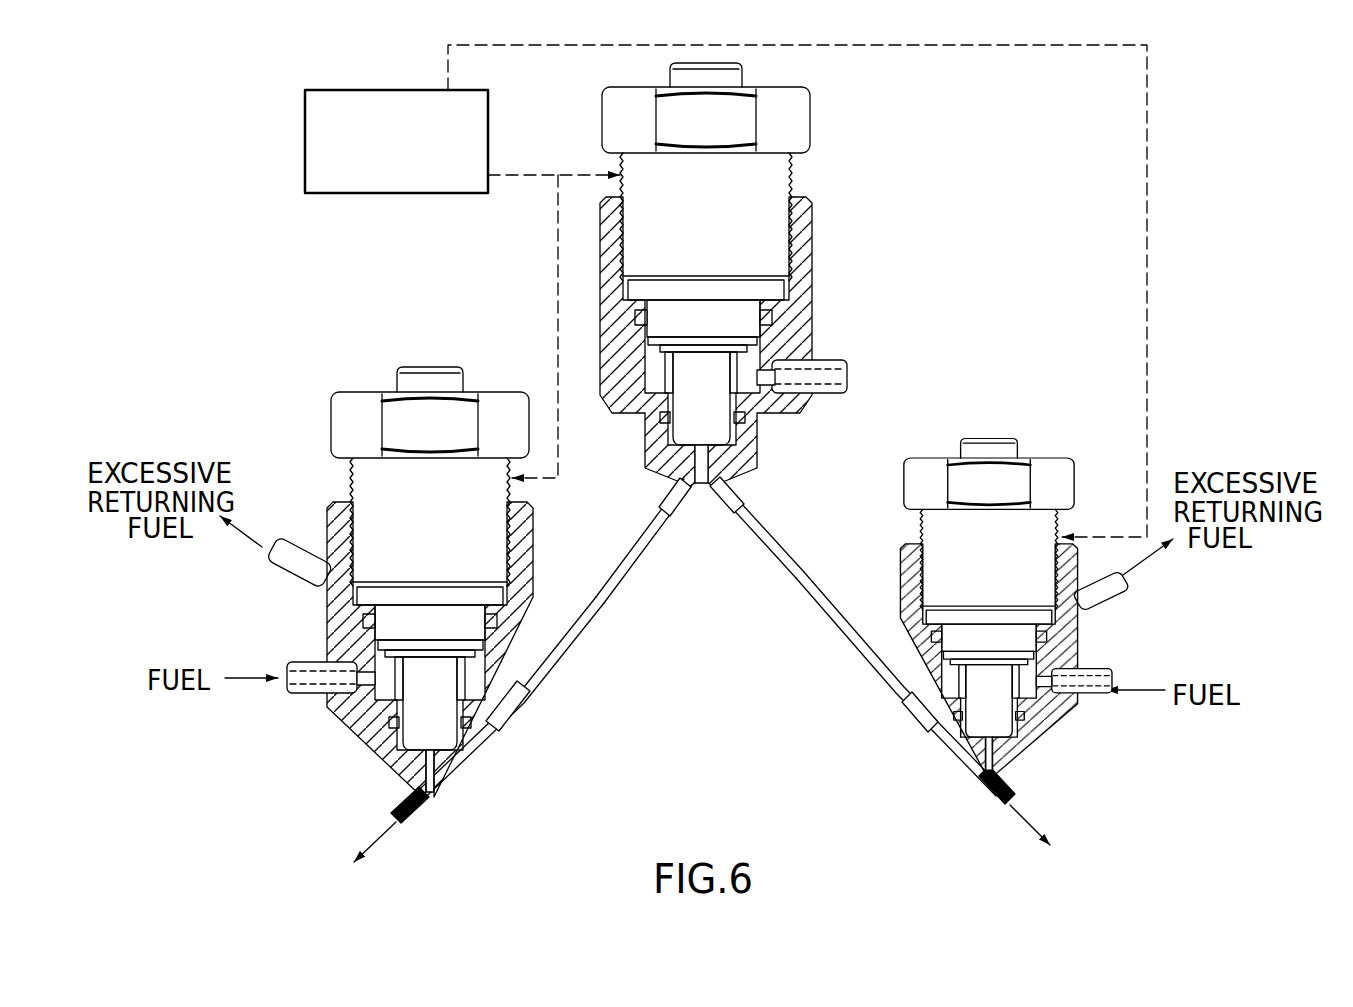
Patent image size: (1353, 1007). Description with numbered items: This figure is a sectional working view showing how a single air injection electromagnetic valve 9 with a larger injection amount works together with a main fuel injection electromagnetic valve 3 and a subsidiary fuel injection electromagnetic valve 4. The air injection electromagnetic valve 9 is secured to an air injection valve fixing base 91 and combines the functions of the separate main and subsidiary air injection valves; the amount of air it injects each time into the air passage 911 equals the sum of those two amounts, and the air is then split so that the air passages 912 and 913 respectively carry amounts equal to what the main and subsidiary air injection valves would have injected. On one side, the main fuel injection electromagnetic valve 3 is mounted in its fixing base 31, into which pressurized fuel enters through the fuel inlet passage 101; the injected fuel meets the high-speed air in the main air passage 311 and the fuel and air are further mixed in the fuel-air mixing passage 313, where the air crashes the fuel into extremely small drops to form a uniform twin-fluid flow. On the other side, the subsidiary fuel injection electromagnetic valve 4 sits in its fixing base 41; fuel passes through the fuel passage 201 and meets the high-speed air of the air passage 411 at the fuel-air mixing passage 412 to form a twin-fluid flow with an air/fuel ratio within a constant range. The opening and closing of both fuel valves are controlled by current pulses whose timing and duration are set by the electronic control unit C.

The main fuel injection electromagnetic valve 3 is at (387, 582).
The subsidiary fuel injection electromagnetic valve 4 is at (1039, 606).
The air injection electromagnetic valve 9 is at (740, 274).
The main fuel injection electromagnetic valve fixing base 31 is at (333, 620).
The fixing base 41 is at (1062, 640).
The air injection valve fixing base 91 is at (803, 290).
The fuel inlet passage 101 is at (293, 698).
The fuel passage 201 is at (1100, 705).
The main air passage 311 is at (537, 690).
The fuel-air mixing passage 313 is at (417, 798).
The air passage 411 is at (910, 700).
The fuel-air mixing passage 412 is at (983, 805).
The air passage 911 is at (707, 455).
The air passage 912 is at (660, 500).
The air passage 913 is at (746, 497).
The electronic control unit C is at (308, 187).